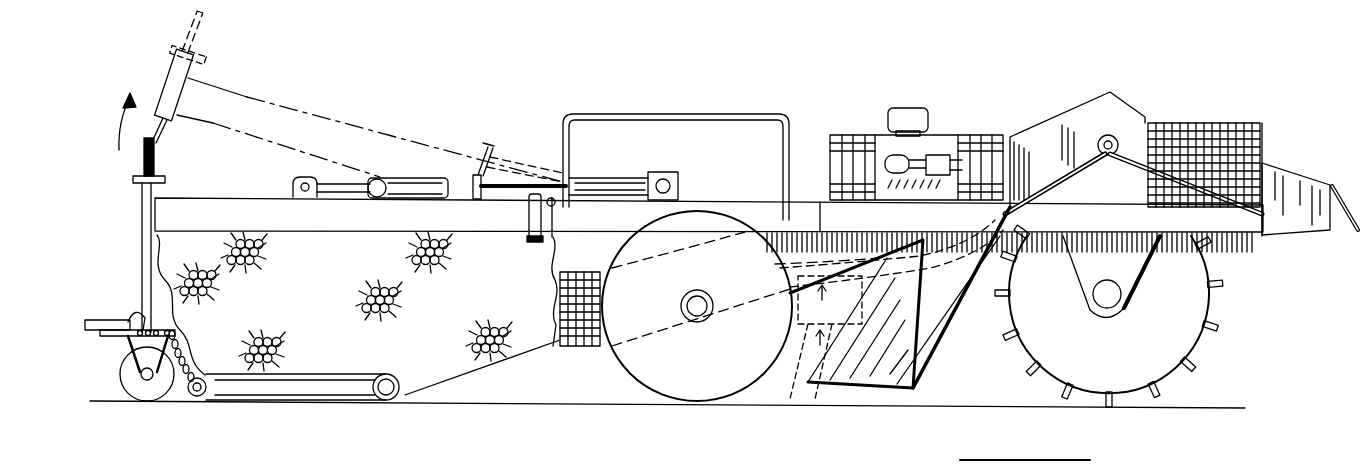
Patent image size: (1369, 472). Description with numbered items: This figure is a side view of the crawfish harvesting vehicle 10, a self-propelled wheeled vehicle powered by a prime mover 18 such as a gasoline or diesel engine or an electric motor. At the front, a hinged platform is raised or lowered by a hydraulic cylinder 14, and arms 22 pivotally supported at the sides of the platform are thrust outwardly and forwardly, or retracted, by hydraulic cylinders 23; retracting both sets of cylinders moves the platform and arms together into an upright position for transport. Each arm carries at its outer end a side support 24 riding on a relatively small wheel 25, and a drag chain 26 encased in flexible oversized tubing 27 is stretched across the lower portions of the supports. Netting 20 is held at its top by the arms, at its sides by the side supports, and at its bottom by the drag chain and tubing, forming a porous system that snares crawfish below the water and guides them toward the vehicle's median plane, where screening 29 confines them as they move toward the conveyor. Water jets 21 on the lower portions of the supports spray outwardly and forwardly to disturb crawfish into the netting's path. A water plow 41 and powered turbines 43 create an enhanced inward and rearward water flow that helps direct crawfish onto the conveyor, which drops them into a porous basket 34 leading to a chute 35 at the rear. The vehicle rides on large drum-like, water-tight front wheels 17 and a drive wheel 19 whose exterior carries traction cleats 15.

The vehicle 10 is at (1199, 37).
The hydraulic cylinder 14 is at (608, 186).
The cleats 15 is at (1188, 364).
The front wheels 17 is at (678, 383).
The prime mover 18 is at (940, 145).
The drive wheel 19 is at (1190, 300).
The netting 20 is at (275, 347).
The water jets 21 is at (100, 322).
The arms 22 is at (265, 213).
The hydraulic cylinders 23 is at (400, 182).
The side support 24 is at (146, 290).
The wheel 25 is at (122, 379).
The drag chain 26 is at (180, 346).
The flexible oversized tubing 27 is at (240, 394).
The screening 29 is at (583, 322).
The basket 34 is at (1195, 138).
The chute 35 is at (1290, 188).
The water plow 41 is at (872, 366).
The powered turbines 43 is at (795, 264).